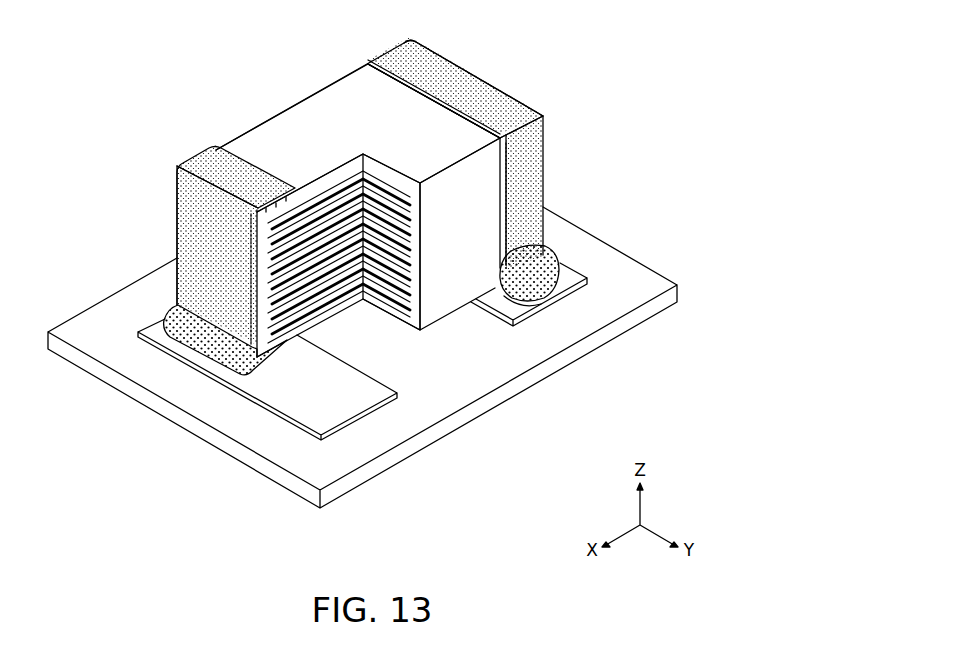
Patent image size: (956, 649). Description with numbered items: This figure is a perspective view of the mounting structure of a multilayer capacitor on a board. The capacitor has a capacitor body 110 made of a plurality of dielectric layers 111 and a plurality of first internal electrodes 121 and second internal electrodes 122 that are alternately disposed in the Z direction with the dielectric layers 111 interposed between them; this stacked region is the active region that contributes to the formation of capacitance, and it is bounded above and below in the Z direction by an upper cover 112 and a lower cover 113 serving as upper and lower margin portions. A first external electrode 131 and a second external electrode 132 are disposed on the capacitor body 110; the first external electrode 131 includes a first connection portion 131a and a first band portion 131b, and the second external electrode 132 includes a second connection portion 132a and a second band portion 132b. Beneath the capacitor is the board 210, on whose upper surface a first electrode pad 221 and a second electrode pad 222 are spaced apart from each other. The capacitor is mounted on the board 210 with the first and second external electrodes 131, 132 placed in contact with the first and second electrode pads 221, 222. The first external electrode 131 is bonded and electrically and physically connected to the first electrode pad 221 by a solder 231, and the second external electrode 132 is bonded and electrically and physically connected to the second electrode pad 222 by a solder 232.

The capacitor body 110 is at (358, 85).
The dielectric layers 111 is at (250, 262).
The upper cover 112 is at (253, 128).
The lower cover 113 is at (403, 312).
The first internal electrodes 121 is at (300, 190).
The second internal electrodes 122 is at (327, 178).
The first external electrode 131 is at (231, 361).
The first connection portion 131a is at (212, 318).
The first band portion 131b is at (251, 348).
The second external electrode 132 is at (529, 153).
The second connection portion 132a is at (547, 133).
The second band portion 132b is at (550, 262).
The board 210 is at (487, 372).
The first electrode pad 221 is at (153, 322).
The second electrode pad 222 is at (572, 273).
The solder 231 is at (182, 292).
The solder 232 is at (552, 296).